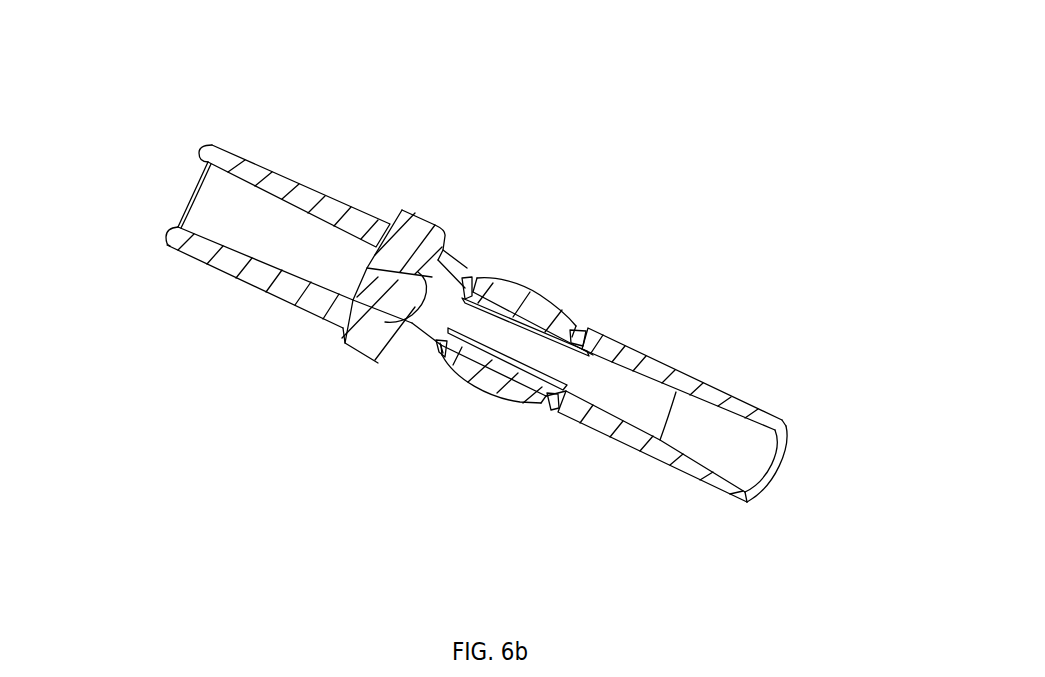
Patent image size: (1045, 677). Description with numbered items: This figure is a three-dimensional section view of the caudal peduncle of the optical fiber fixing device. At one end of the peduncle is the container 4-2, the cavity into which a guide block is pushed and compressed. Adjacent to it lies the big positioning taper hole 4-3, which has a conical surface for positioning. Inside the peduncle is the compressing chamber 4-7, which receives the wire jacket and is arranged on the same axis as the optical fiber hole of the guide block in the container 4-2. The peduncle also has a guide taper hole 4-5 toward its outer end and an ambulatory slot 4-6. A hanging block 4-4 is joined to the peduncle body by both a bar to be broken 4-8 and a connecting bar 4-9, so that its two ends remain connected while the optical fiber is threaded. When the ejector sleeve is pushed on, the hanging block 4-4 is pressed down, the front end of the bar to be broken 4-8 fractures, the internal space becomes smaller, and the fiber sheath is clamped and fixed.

The container 4-2 is at (222, 221).
The big positioning taper hole 4-3 is at (400, 282).
The hanging block 4-4 is at (537, 300).
The guide taper hole 4-5 is at (743, 450).
The ambulatory slot 4-6 is at (508, 362).
The compressing chamber 4-7 is at (558, 362).
The bar to be broken 4-8 is at (440, 346).
The connecting bar 4-9 is at (558, 408).